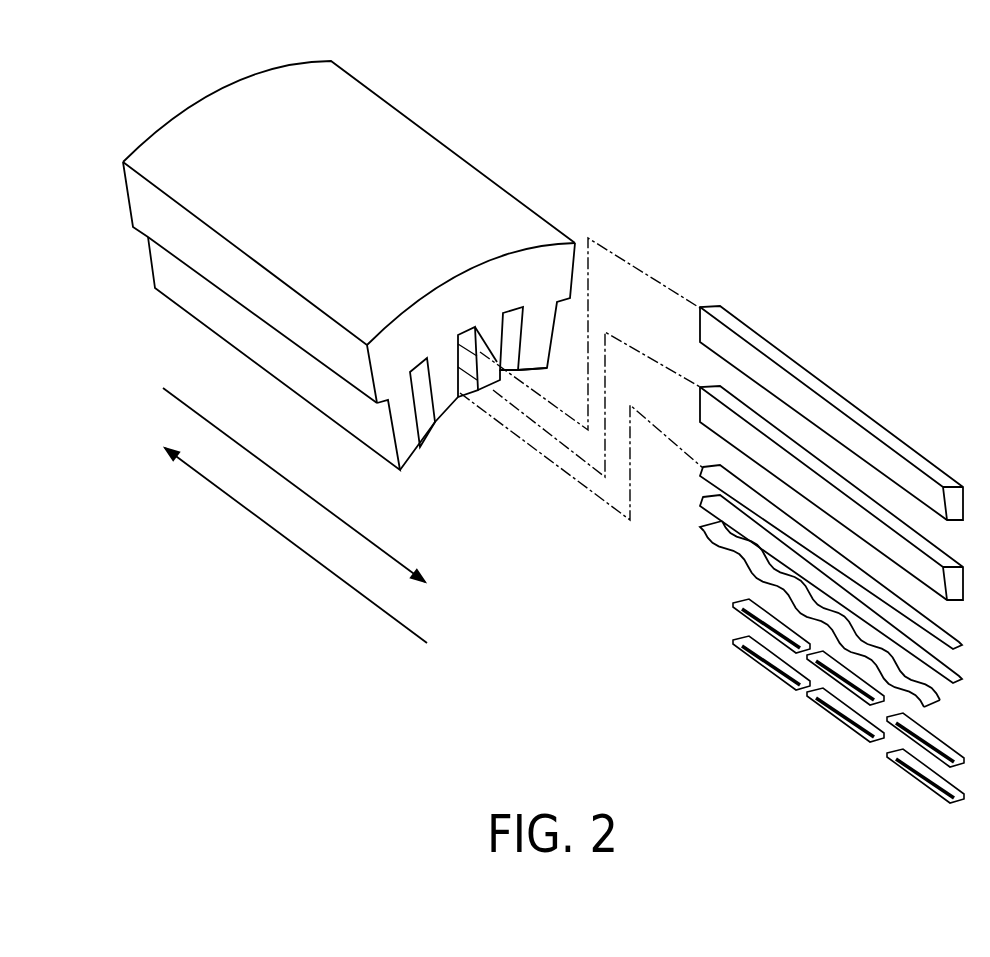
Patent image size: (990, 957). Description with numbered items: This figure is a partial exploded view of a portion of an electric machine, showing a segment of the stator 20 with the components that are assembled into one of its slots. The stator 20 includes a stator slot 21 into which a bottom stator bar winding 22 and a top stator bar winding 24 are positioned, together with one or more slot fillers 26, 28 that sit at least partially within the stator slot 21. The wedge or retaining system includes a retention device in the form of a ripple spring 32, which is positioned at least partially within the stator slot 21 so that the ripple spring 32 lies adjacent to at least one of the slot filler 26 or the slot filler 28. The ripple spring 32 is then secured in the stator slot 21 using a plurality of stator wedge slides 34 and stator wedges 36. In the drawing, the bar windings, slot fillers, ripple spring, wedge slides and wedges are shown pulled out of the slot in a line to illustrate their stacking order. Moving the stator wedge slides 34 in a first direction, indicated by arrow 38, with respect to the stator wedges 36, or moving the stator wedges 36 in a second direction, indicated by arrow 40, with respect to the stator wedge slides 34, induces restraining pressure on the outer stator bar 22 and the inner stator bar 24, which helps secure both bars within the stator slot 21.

The stator 20 is at (349, 290).
The stator slot 21 is at (425, 420).
The bottom stator bar winding 22 is at (724, 316).
The top stator bar winding 24 is at (712, 386).
The slot filler 26 is at (722, 468).
The slot filler 28 is at (712, 497).
The ripple spring 32 is at (703, 537).
The stator wedge slides 34 is at (735, 602).
The stator wedges 36 is at (737, 639).
The arrow 38 is at (337, 577).
The arrow 40 is at (403, 560).